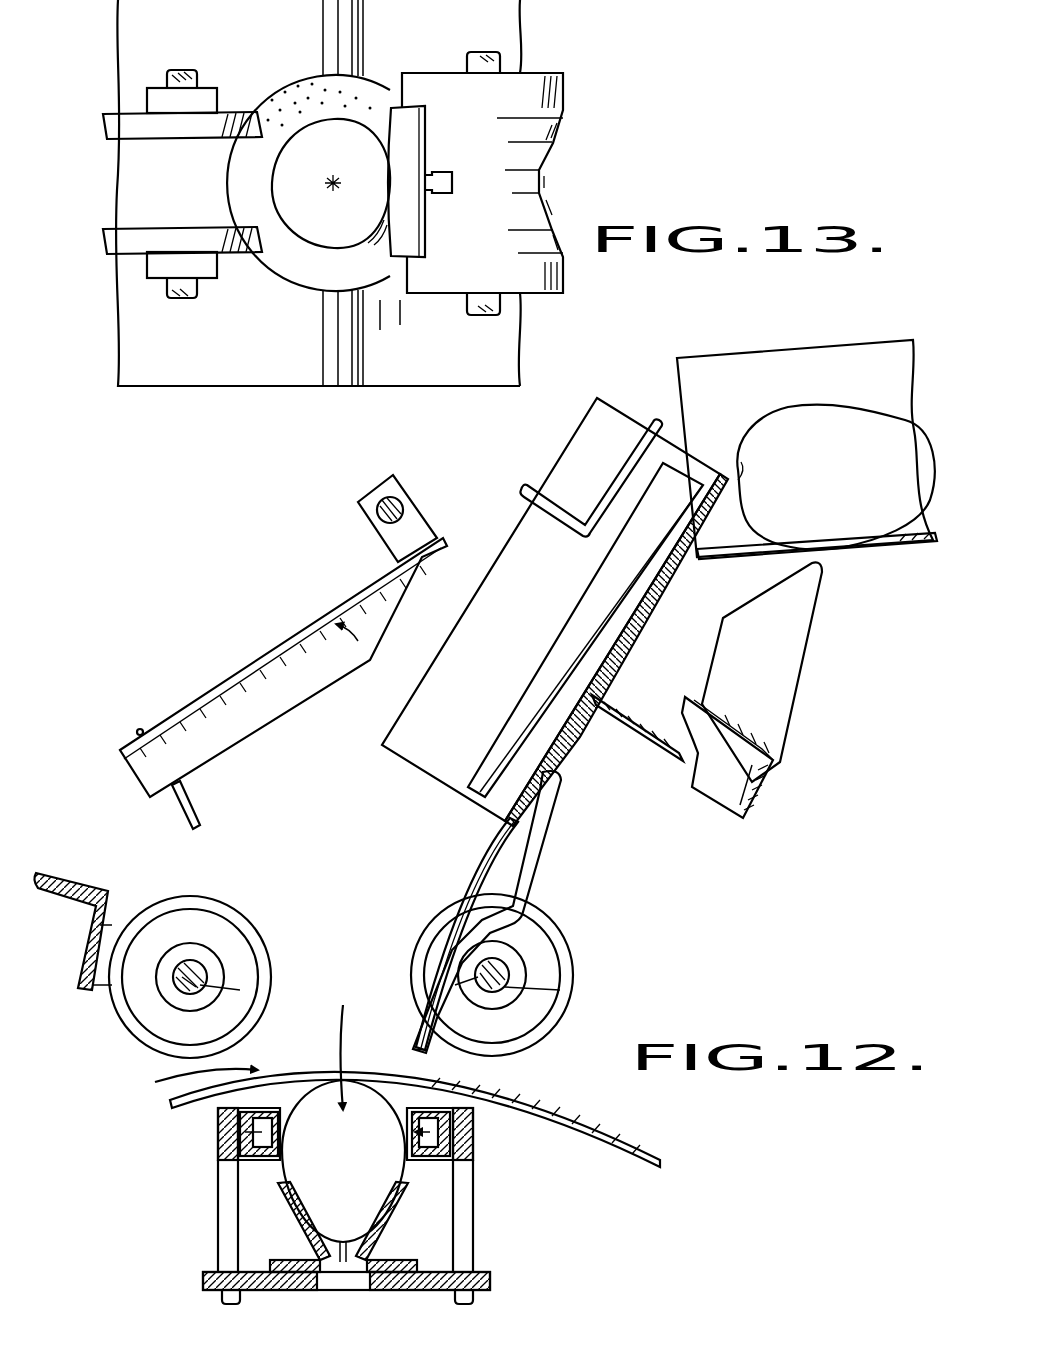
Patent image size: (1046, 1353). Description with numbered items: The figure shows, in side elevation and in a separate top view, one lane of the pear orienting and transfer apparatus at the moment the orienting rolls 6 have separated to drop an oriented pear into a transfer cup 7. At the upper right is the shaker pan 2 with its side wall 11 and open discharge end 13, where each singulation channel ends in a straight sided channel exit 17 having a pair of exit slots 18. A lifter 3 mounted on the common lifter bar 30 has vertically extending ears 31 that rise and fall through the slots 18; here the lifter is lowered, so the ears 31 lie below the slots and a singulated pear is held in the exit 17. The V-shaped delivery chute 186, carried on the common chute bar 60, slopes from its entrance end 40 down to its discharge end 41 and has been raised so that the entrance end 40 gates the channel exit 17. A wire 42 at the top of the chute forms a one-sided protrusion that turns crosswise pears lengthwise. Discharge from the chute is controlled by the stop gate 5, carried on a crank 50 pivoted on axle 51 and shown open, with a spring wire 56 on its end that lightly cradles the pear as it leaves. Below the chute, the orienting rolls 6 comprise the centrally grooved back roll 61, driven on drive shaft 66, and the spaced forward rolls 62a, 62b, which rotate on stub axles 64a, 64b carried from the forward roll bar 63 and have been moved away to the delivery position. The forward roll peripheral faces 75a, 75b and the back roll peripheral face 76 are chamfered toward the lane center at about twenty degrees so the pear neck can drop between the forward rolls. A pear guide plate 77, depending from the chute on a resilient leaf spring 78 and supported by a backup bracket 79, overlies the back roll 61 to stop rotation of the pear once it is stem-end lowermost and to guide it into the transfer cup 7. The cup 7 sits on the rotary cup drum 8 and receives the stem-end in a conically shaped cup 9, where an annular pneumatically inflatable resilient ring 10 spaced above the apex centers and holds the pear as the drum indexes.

In FIG. 12, the shaker pan 2 is at (786, 342).
In FIG. 12, the lifter 3 is at (770, 693).
In FIG. 12, the discharge stop gate 5 is at (230, 676).
In FIG. 13, the orienting rolls 6 is at (248, 80).
In FIG. 12, the orienting rolls 6 is at (306, 897).
In FIG. 13, the transfer cup 7 is at (316, 116).
In FIG. 12, the transfer cup 7 is at (234, 1057).
In FIG. 12, the rotary cup drum 8 is at (560, 1108).
In FIG. 12, the conically shaped cup 9 is at (302, 1218).
In FIG. 12, the pneumatically inflatable resilient ring 10 is at (238, 1150).
In FIG. 12, the side wall 11 is at (730, 397).
In FIG. 12, the open discharge end 13 is at (660, 392).
In FIG. 12, the channel exit 17 is at (904, 556).
In FIG. 12, the exit slot 18 is at (845, 558).
In FIG. 12, the lifter bar 30 is at (758, 795).
In FIG. 12, the ear 31 is at (770, 662).
In FIG. 12, the entrance end 40 is at (618, 398).
In FIG. 12, the discharge end 41 is at (410, 772).
In FIG. 12, the wire 42 is at (550, 515).
In FIG. 12, the crank 50 is at (420, 525).
In FIG. 12, the axle 51 is at (398, 500).
In FIG. 12, the spring wire 56 is at (183, 815).
In FIG. 12, the chute bar 60 is at (658, 755).
In FIG. 13, the back roll 61 is at (565, 100).
In FIG. 12, the back roll 61 is at (560, 940).
In FIG. 13, the forward roll 62a is at (103, 122).
In FIG. 12, the forward roll 62a is at (128, 1026).
In FIG. 13, the forward roll 62b is at (104, 252).
In FIG. 12, the forward roll bar 63 is at (70, 880).
In FIG. 13, the stub axle 64a is at (176, 70).
In FIG. 12, the stub axle 64a is at (190, 962).
In FIG. 13, the stub axle 64b is at (185, 300).
In FIG. 13, the drive shaft 66 is at (488, 52).
In FIG. 12, the drive shaft 66 is at (560, 990).
In FIG. 13, the peripheral face 75a is at (186, 126).
In FIG. 12, the peripheral face 75a is at (262, 957).
In FIG. 13, the peripheral face 75b is at (170, 236).
In FIG. 13, the back roll peripheral face 76 is at (548, 160).
In FIG. 13, the pear guide plate 77 is at (385, 250).
In FIG. 12, the pear guide plate 77 is at (412, 1032).
In FIG. 13, the resilient leaf spring 78 is at (442, 196).
In FIG. 12, the resilient leaf spring 78 is at (466, 885).
In FIG. 12, the backup bracket 79 is at (550, 843).
In FIG. 12, the delivery chute 186 is at (576, 440).